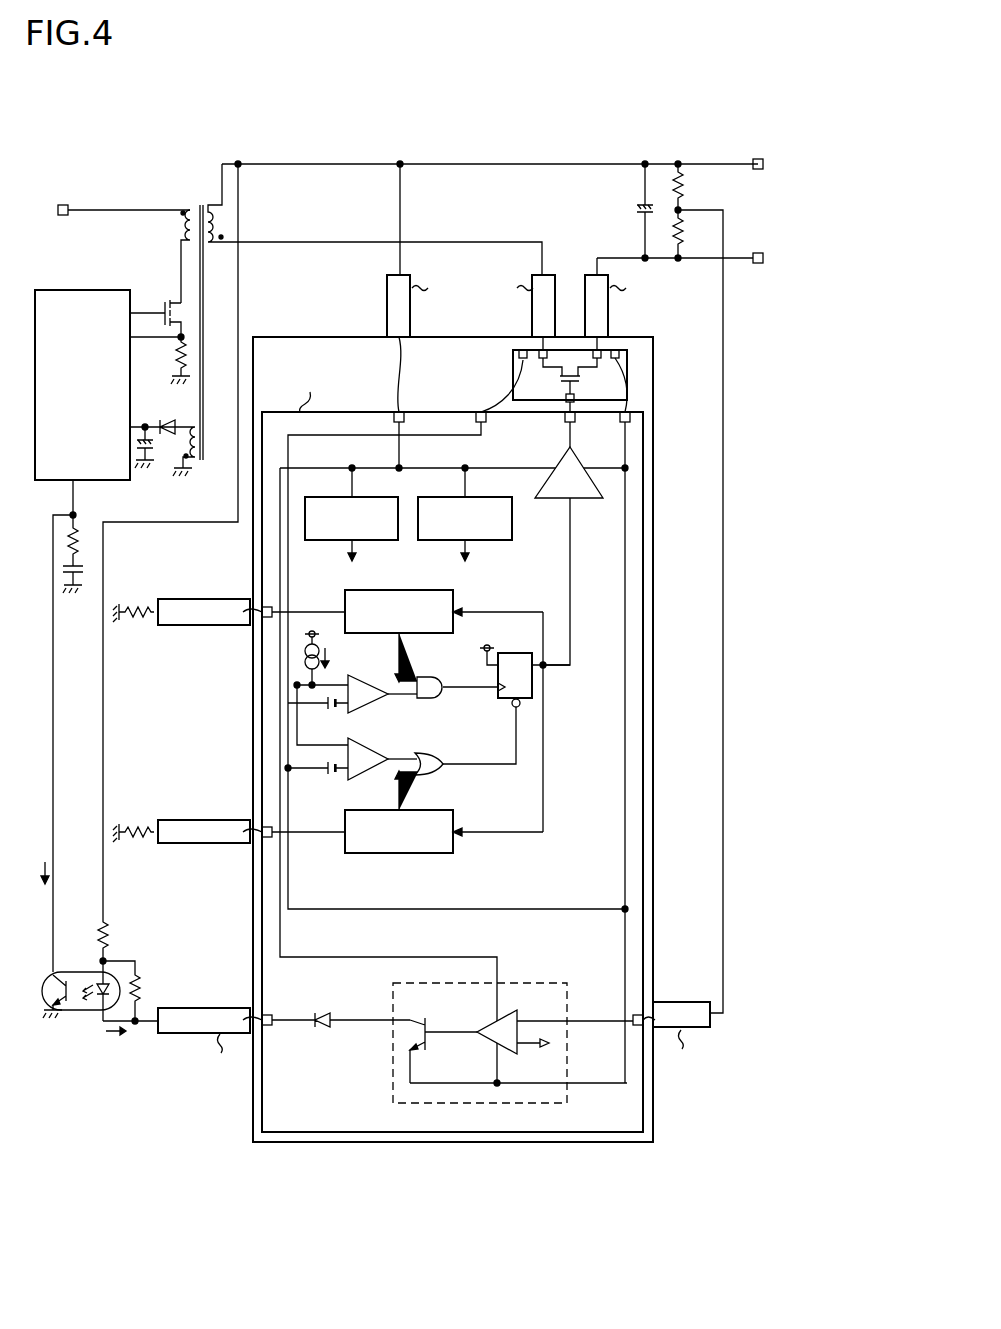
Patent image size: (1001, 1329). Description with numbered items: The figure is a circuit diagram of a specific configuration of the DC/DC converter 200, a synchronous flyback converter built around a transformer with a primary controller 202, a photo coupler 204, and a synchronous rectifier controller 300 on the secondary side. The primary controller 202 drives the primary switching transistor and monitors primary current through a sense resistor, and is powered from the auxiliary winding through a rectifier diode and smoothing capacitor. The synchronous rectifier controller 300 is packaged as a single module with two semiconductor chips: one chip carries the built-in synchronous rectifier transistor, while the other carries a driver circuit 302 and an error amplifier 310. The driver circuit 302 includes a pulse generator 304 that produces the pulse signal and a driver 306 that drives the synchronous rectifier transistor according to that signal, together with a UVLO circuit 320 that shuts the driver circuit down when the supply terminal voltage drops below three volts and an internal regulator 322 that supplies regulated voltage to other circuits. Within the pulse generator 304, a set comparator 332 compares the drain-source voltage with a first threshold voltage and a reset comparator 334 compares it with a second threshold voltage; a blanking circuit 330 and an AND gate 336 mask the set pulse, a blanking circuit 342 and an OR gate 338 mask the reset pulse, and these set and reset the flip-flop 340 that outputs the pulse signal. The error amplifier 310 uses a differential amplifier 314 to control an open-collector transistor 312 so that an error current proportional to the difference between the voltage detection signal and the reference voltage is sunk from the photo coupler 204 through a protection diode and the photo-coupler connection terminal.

The DC/DC converter 200 is at (630, 117).
The primary controller 202 is at (90, 292).
The photo coupler 204 is at (80, 970).
The synchronous rectifier controller 300 is at (455, 1142).
The driver circuit 302 is at (660, 412).
The pulse generator 304 is at (577, 590).
The driver 306 is at (590, 498).
The error amplifier 310 is at (393, 1073).
The transistor 312 is at (428, 1021).
The differential amplifier 314 is at (480, 1053).
The UVLO circuit 320 is at (474, 497).
The internal regulator 322 is at (362, 497).
The blanking circuit 330 is at (378, 590).
The set comparator 332 is at (362, 683).
The reset comparator 334 is at (362, 748).
The AND gate 336 is at (428, 676).
The OR gate 338 is at (430, 761).
The flip-flop 340 is at (512, 653).
The blanking circuit 342 is at (404, 810).